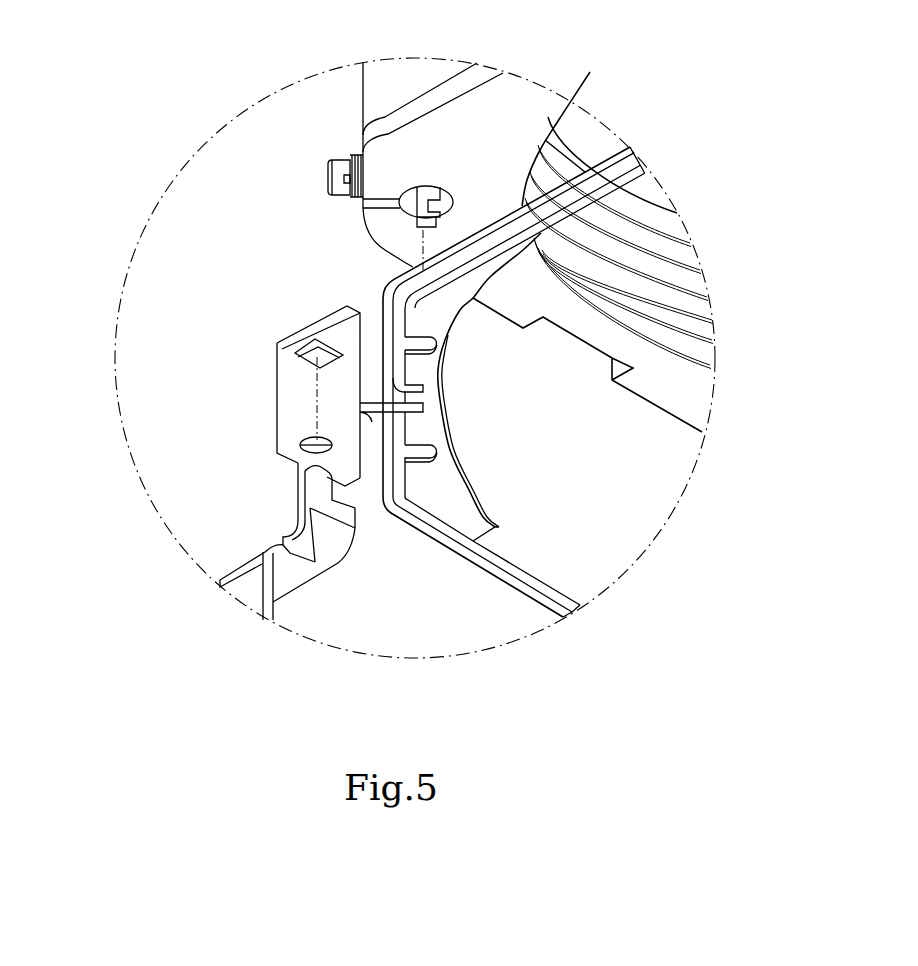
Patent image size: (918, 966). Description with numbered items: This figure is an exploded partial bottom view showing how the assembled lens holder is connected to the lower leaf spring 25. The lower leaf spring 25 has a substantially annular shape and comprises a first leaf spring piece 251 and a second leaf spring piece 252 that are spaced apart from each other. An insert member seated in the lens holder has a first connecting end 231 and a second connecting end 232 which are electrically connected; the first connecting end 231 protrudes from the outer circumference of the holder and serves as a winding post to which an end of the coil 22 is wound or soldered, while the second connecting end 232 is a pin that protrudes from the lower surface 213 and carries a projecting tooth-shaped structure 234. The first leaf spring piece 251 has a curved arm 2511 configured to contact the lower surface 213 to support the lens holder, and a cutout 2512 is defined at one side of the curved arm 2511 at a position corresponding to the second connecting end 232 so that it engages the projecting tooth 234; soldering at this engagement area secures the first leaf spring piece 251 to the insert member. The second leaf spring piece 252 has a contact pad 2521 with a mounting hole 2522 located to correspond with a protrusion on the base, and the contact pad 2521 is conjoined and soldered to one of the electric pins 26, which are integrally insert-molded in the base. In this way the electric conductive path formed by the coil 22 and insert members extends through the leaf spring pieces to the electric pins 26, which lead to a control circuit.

The lower leaf spring 25 is at (148, 272).
The lower surface 213 is at (510, 93).
The coil 22 is at (357, 166).
The first connecting end 231 is at (350, 197).
The second connecting end 232 is at (408, 213).
The projecting tooth-shaped structure 234 is at (447, 210).
The first leaf spring piece 251 is at (397, 276).
The curved arm 2511 is at (462, 500).
The cutout 2512 is at (428, 345).
The second leaf spring piece 252 is at (545, 592).
The contact pad 2521 is at (290, 405).
The mounting hole 2522 is at (292, 352).
The electric pin 26 is at (320, 538).